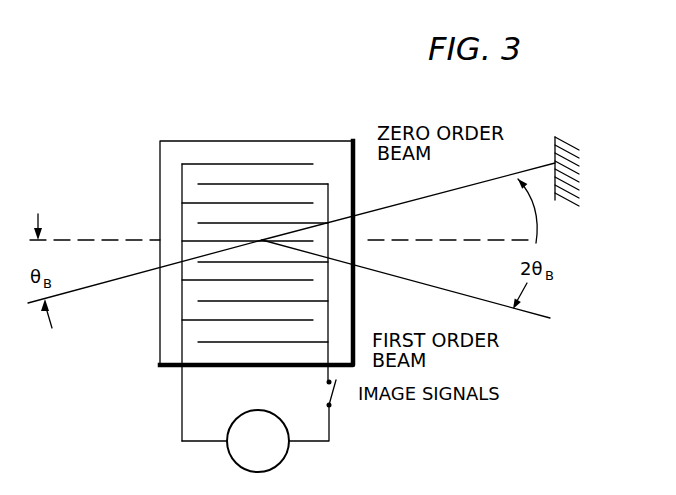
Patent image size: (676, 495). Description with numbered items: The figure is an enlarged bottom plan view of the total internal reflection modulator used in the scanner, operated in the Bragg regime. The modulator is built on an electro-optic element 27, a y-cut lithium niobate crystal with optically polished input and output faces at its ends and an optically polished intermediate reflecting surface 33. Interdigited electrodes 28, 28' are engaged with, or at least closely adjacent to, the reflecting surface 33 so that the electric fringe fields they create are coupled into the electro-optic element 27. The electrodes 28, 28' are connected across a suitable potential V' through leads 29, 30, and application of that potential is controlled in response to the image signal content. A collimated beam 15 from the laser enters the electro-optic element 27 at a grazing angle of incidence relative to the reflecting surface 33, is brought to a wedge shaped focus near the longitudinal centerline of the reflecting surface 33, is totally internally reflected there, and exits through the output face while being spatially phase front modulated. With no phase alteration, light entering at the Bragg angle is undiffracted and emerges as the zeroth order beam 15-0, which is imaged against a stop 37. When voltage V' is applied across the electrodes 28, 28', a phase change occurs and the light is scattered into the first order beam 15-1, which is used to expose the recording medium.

The electro-optic element 27 is at (184, 140).
The addressable electrode 28 is at (263, 237).
The addressable electrode 28' is at (202, 298).
The reflecting surface 33 is at (172, 351).
The collimated beam 15 is at (80, 290).
The zeroth order beam 15-0 is at (495, 179).
The first order beam 15-1 is at (547, 316).
The stop 37 is at (556, 139).
The lead 30 is at (182, 414).
The lead 29 is at (332, 418).